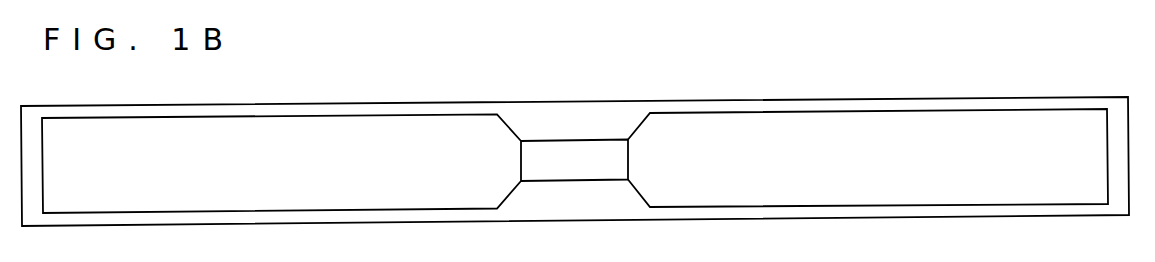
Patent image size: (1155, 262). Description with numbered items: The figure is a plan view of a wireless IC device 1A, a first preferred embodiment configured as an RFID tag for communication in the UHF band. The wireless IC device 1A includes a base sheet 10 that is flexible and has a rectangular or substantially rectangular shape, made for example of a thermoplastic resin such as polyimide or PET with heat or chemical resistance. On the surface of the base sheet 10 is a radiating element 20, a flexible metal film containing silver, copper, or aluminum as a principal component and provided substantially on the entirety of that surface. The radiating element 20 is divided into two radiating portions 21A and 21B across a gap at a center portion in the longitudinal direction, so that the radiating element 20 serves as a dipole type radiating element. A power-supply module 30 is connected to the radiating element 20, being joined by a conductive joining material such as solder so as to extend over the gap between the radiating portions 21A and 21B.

The wireless IC device 1A is at (753, 62).
The base sheet 10 is at (832, 100).
The radiating element 20 is at (437, 150).
The radiating portion 21A is at (322, 155).
The radiating portion 21B is at (941, 148).
The power-supply module 30 is at (604, 128).